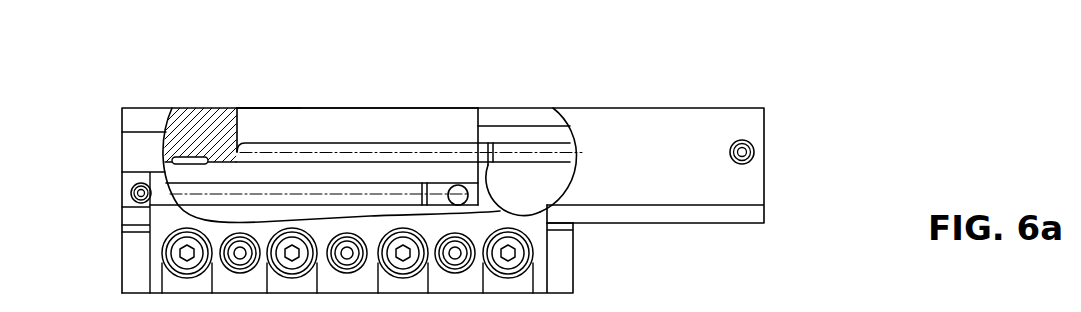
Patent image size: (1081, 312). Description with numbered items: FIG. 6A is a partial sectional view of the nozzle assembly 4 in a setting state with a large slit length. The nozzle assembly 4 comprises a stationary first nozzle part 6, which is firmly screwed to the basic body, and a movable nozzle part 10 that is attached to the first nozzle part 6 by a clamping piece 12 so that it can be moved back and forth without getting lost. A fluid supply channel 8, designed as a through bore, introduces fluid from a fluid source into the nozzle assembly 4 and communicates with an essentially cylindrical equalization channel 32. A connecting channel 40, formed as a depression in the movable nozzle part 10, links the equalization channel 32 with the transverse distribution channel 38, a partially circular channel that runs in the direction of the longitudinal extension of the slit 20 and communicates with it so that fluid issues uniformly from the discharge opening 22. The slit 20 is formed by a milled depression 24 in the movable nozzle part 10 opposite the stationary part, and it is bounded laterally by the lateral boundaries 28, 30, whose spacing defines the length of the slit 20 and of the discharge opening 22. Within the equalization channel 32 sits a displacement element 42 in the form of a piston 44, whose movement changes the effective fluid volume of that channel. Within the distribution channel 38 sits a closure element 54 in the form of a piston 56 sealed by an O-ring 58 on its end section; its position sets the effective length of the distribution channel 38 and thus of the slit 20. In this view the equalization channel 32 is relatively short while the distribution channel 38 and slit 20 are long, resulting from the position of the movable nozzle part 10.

The nozzle assembly 4 is at (782, 158).
The first nozzle part 6 is at (568, 277).
The fluid supply channel 8 is at (473, 200).
The movable nozzle part 10 is at (764, 119).
The clamping piece 12 is at (150, 271).
The slit 20 is at (298, 118).
The discharge opening 22 is at (252, 109).
The depression 24 is at (470, 108).
The lateral boundary 28 is at (515, 150).
The lateral boundary 30 is at (237, 108).
The equalization channel 32 is at (443, 170).
The transverse distribution channel 38 is at (339, 150).
The connecting channel 40 is at (460, 122).
The displacement element 42 is at (330, 184).
The piston 44 is at (393, 194).
The closure element 54 is at (543, 142).
The piston 56 is at (500, 157).
The O-ring 58 is at (500, 167).